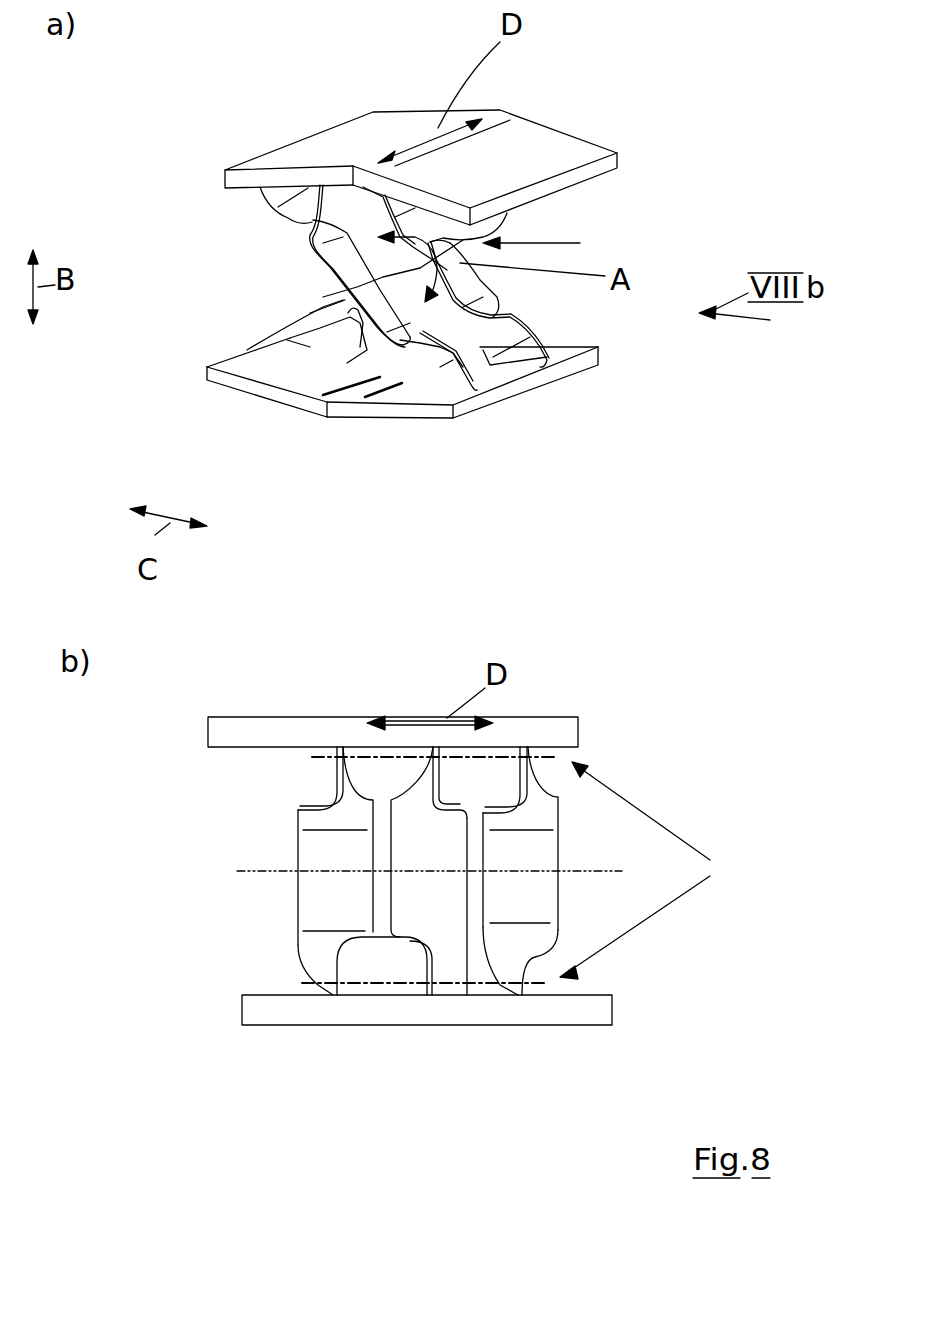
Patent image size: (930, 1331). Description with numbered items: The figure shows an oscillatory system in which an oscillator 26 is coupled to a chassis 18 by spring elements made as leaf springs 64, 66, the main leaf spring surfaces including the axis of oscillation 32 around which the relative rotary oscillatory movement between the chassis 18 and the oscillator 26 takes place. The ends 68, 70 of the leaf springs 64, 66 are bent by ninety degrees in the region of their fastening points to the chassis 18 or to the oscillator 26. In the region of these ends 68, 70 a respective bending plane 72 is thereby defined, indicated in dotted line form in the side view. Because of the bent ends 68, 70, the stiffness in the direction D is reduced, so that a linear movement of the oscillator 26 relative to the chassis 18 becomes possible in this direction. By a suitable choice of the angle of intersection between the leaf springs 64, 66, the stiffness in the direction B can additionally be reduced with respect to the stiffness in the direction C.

In FIG. 8a, the chassis 18 is at (365, 413).
In FIG. 8b, the chassis 18 is at (568, 1020).
In FIG. 8a, the oscillator 26 is at (565, 140).
In FIG. 8b, the oscillator 26 is at (557, 725).
In FIG. 8a, the axis of oscillation 32 is at (563, 244).
In FIG. 8b, the axis of oscillation 32 is at (252, 870).
In FIG. 8a, the leaf spring 64 is at (337, 257).
In FIG. 8b, the leaf spring 64 is at (557, 857).
In FIG. 8a, the leaf spring 66 is at (330, 303).
In FIG. 8b, the leaf spring 66 is at (445, 917).
In FIG. 8a, the end of leaf spring 68 is at (275, 202).
In FIG. 8b, the end of leaf spring 68 is at (343, 786).
In FIG. 8a, the end of leaf spring 70 is at (507, 217).
In FIG. 8b, the end of leaf spring 70 is at (421, 775).
In FIG. 8b, the bending plane 72 is at (652, 870).